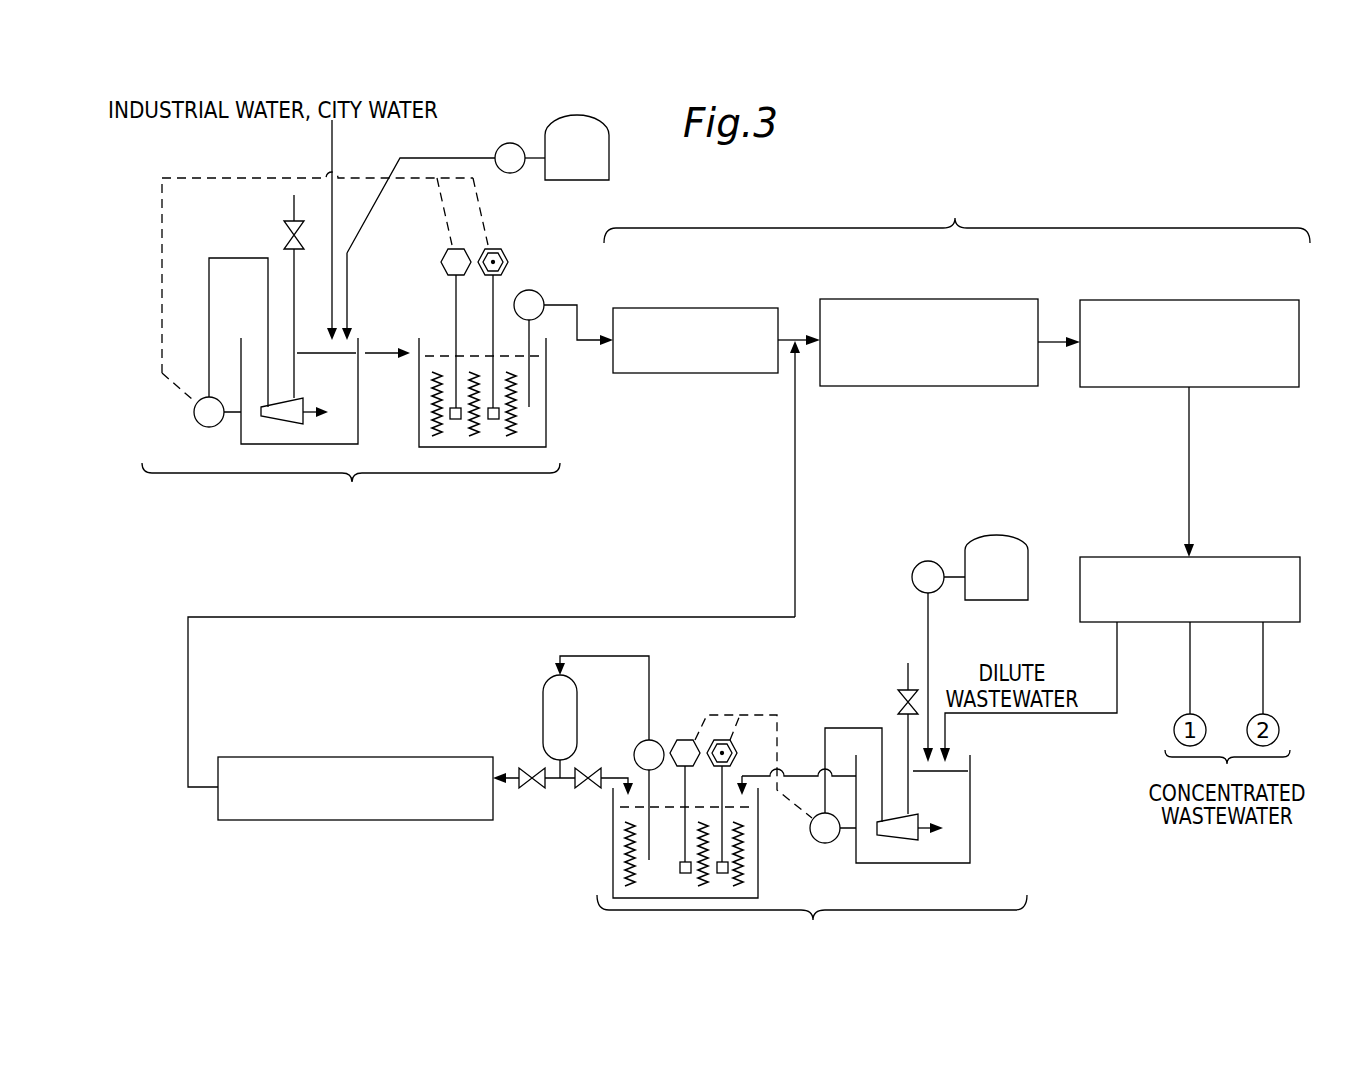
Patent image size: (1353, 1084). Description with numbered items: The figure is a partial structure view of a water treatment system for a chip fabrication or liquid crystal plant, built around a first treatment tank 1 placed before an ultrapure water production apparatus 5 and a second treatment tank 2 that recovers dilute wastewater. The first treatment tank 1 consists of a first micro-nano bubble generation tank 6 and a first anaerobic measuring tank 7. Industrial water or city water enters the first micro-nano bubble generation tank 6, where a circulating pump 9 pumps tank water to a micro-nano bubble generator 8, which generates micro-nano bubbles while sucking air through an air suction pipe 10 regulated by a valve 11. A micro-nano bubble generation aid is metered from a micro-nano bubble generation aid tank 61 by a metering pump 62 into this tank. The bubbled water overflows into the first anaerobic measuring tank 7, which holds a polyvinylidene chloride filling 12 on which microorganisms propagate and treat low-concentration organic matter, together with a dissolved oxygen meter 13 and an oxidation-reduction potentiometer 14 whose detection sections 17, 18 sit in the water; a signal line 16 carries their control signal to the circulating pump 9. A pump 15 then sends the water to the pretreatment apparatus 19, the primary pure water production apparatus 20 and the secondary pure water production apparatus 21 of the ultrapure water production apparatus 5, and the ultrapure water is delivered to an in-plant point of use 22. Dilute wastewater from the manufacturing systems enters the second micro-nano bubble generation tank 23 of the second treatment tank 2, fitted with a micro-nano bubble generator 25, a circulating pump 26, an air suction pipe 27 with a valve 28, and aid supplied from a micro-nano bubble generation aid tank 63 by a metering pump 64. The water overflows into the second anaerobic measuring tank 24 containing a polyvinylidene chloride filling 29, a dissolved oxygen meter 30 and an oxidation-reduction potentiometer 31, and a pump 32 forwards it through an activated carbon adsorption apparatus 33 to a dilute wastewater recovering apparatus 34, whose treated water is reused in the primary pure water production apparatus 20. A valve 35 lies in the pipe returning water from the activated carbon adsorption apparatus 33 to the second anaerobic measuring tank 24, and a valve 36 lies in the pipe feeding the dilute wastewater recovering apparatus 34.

The first treatment tank 1 is at (351, 492).
The second treatment tank 2 is at (812, 925).
The ultrapure water production apparatus 5 is at (957, 213).
The first micro-nano bubble generation tank 6 is at (241, 428).
The first anaerobic measuring tank 7 is at (419, 440).
The micro-nano bubble generator 8 is at (304, 400).
The circulating pump 9 is at (194, 412).
The air suction pipe 10 is at (294, 197).
The valve 11 is at (284, 240).
The polyvinylidene chloride filling 12 is at (442, 372).
The dissolved oxygen meter 13 is at (441, 262).
The oxidation-reduction potentiometer 14 is at (504, 248).
The pump 15 is at (535, 291).
The signal line 16 is at (197, 178).
The detection section 17 is at (442, 410).
The detection section 18 is at (513, 412).
The pretreatment apparatus 19 is at (697, 308).
The primary pure water production apparatus 20 is at (930, 299).
The secondary pure water production apparatus 21 is at (1190, 300).
The in-plant point of use 22 is at (1244, 557).
The second micro-nano bubble generation tank 23 is at (972, 792).
The second anaerobic measuring tank 24 is at (612, 857).
The micro-nano bubble generator 25 is at (920, 814).
The circulating pump 26 is at (825, 843).
The air suction pipe 27 is at (906, 668).
The valve 28 is at (898, 704).
The polyvinylidene chloride filling 29 is at (745, 843).
The dissolved oxygen meter 30 is at (680, 740).
The oxidation-reduction potentiometer 31 is at (737, 756).
The pump 32 is at (636, 745).
The activated carbon adsorption apparatus 33 is at (543, 700).
The dilute wastewater recovering apparatus 34 is at (358, 757).
The valve 35 is at (586, 790).
The valve 36 is at (528, 790).
The micro-nano bubble generation aid tank 61 is at (607, 123).
The metering pump 62 is at (497, 148).
The micro-nano bubble generation aid tank 63 is at (997, 535).
The metering pump 64 is at (916, 566).